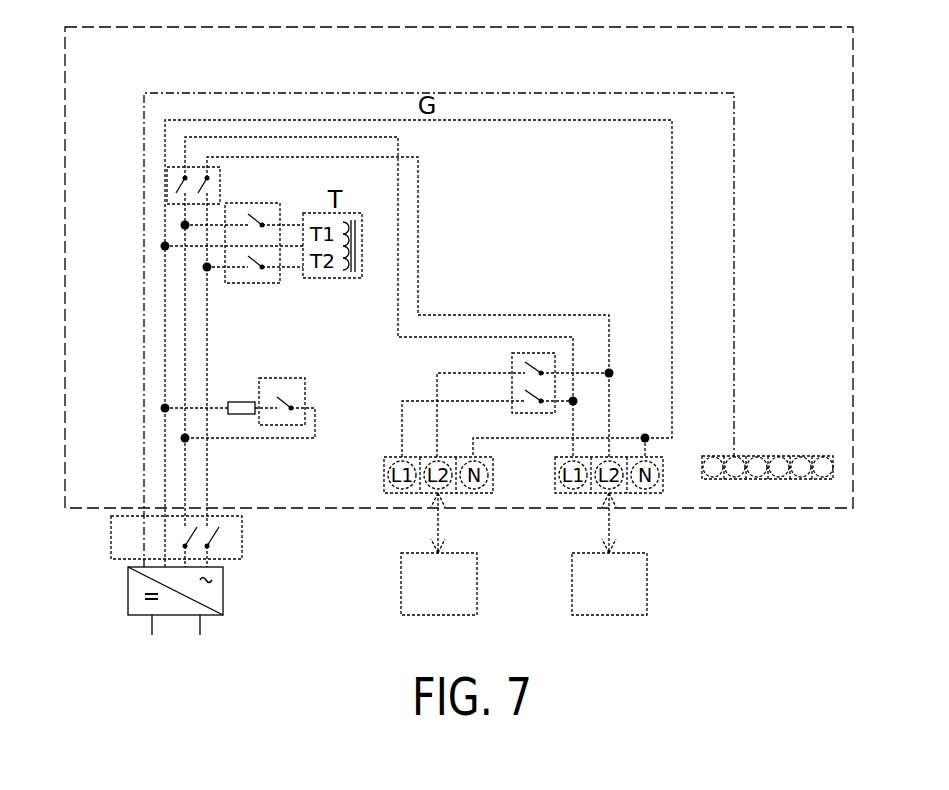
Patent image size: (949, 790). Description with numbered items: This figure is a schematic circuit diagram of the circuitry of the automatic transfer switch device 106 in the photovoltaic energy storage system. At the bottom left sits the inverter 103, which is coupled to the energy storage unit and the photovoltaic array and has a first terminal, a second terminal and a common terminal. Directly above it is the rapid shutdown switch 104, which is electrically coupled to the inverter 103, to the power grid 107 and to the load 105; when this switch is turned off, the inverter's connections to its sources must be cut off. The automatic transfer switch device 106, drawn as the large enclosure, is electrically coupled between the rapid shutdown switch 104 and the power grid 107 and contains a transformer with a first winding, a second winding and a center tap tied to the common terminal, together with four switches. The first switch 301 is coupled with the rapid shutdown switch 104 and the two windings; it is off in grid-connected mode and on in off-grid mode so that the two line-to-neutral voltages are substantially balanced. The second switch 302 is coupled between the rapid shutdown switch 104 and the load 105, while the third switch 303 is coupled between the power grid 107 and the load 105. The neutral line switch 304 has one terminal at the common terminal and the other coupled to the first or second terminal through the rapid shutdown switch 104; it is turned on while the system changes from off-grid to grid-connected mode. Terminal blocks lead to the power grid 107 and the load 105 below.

The automatic transfer switch device 106 is at (855, 90).
The second switch 302 is at (167, 178).
The first switch 301 is at (252, 285).
The neutral line switch 304 is at (284, 378).
The third switch 303 is at (512, 360).
The rapid shutdown switch 104 is at (244, 541).
The inverter 103 is at (225, 596).
The power grid 107 is at (478, 576).
The load 105 is at (648, 576).